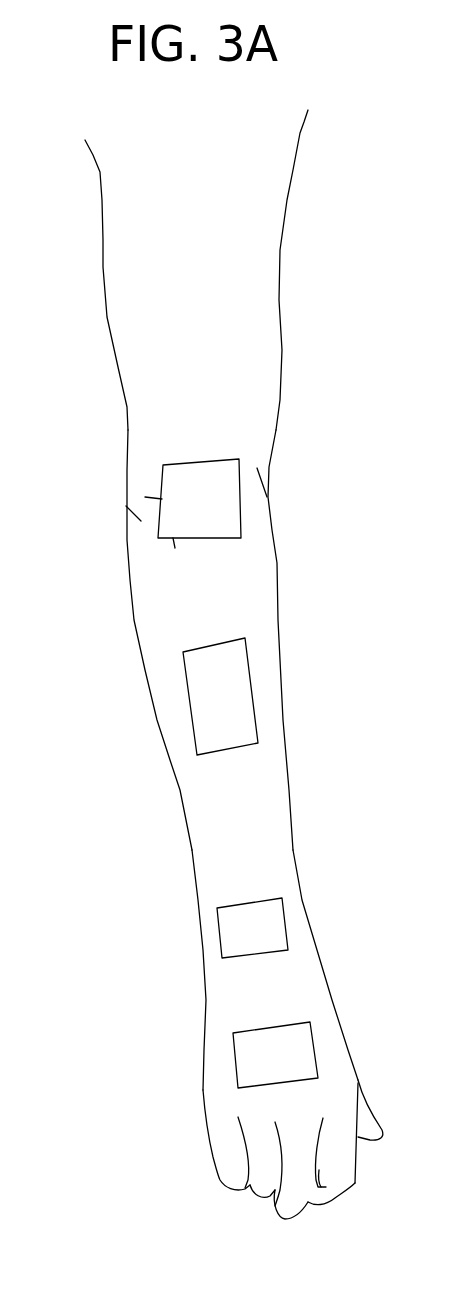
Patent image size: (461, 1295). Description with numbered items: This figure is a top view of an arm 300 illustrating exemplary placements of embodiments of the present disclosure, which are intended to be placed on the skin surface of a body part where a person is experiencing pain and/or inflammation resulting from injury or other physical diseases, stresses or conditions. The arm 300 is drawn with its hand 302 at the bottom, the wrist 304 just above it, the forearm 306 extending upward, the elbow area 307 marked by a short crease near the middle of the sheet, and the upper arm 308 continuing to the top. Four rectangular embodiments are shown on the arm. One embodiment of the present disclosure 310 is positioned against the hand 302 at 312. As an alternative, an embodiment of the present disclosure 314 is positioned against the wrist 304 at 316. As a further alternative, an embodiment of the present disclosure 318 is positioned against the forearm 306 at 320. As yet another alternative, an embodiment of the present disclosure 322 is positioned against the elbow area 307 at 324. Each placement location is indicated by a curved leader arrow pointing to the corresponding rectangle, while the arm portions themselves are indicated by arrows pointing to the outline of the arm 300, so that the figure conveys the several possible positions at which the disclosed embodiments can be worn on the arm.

The arm 300 is at (234, 664).
The hand 302 is at (362, 1062).
The wrist 304 is at (317, 918).
The forearm 306 is at (318, 658).
The elbow area 307 is at (286, 512).
The upper arm 308 is at (306, 303).
The embodiment of the present disclosure 310 is at (273, 1055).
The placement location on the hand 312 is at (224, 1040).
The embodiment of the present disclosure 314 is at (248, 928).
The placement location on the wrist 316 is at (197, 915).
The embodiment of the present disclosure 318 is at (203, 710).
The placement location on the forearm 320 is at (159, 684).
The embodiment of the present disclosure 322 is at (177, 498).
The placement location on the elbow area 324 is at (139, 490).